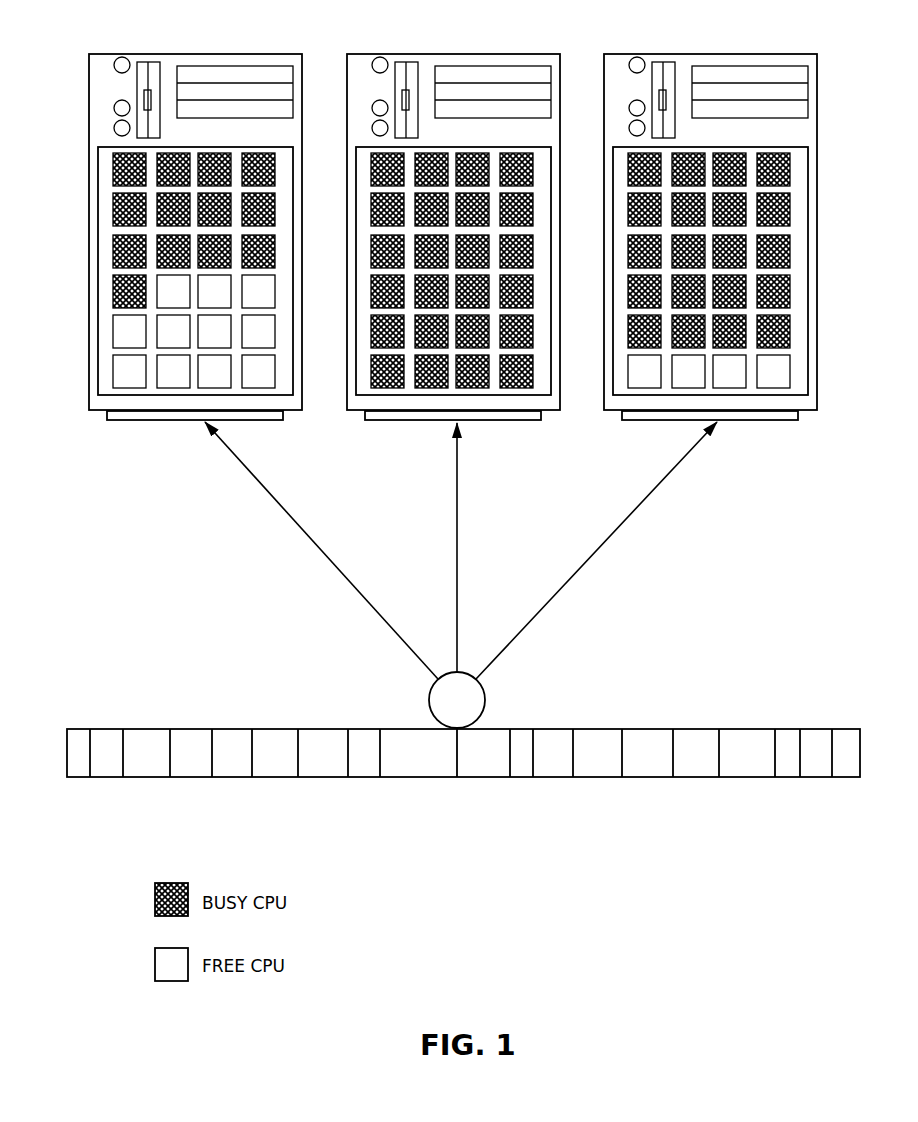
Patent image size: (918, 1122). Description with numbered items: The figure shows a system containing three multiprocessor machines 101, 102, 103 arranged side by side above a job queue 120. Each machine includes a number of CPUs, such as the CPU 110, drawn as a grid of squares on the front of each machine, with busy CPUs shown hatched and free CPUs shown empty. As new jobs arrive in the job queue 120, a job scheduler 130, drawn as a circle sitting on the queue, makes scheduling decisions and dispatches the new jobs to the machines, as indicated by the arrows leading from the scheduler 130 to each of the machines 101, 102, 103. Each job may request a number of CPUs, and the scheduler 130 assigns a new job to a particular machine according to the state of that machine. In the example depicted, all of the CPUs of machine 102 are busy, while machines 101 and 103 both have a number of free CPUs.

The multiprocessor machine 101 is at (173, 223).
The multiprocessor machine 102 is at (458, 43).
The multiprocessor machine 103 is at (716, 43).
The CPU 110 is at (112, 250).
The job queue 120 is at (430, 777).
The job scheduler 130 is at (485, 710).